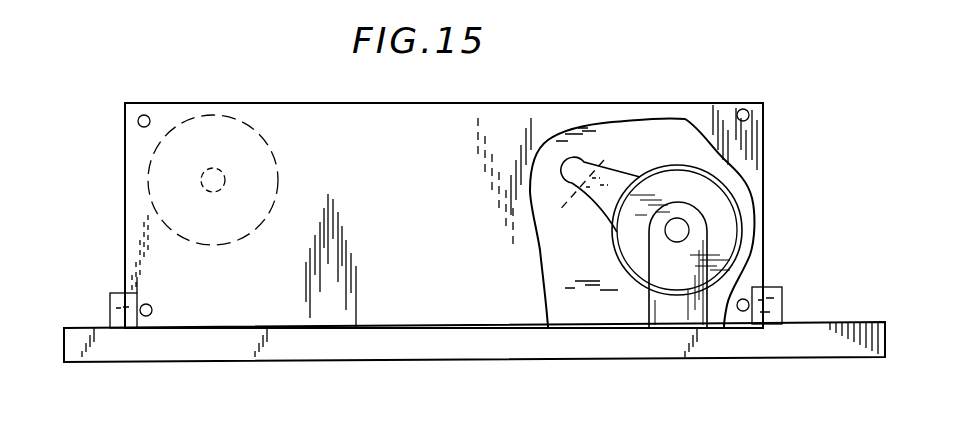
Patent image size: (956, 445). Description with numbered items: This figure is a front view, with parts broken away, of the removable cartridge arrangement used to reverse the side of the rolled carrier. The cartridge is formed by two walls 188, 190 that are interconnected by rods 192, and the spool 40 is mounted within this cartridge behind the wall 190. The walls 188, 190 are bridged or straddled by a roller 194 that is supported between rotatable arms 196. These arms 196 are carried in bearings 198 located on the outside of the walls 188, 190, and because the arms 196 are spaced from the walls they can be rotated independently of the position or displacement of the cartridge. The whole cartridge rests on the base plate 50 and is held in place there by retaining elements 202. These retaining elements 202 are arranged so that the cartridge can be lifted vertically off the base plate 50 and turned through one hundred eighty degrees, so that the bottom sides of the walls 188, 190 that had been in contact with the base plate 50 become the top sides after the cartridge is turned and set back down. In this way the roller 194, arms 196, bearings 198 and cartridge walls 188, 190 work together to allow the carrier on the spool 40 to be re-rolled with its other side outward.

The cartridge wall 190 is at (504, 90).
The rod 192 is at (750, 115).
The spool 40 is at (218, 188).
The retaining element 202 is at (110, 293).
The cartridge wall 188 is at (577, 313).
The rotatable arm 196 is at (609, 176).
The roller 194 is at (580, 201).
The bearing 198 is at (658, 255).
The base plate 50 is at (826, 345).